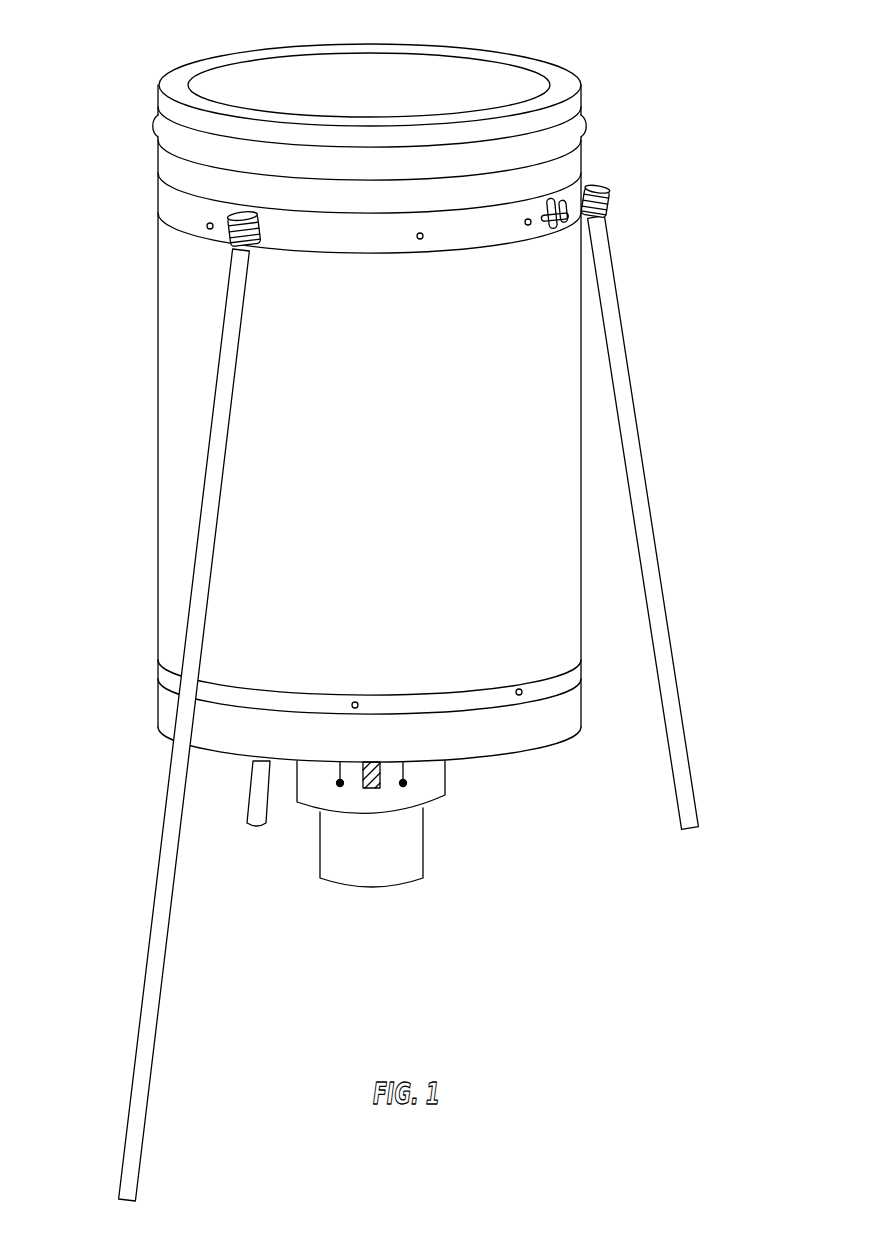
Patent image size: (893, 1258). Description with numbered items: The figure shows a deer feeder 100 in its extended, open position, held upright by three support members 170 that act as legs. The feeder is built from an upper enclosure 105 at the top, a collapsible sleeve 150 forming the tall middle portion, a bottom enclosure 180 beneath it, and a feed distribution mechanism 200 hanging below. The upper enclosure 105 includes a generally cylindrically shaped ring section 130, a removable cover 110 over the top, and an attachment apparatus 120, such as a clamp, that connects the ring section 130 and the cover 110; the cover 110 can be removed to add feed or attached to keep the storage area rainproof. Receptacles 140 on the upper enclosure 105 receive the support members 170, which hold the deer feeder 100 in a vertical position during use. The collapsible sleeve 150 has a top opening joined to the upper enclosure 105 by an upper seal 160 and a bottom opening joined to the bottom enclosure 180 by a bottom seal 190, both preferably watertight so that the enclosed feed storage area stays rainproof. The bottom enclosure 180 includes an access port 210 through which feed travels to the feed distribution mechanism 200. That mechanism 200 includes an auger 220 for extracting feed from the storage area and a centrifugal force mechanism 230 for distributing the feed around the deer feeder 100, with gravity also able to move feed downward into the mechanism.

The deer feeder 100 is at (450, 603).
The upper enclosure 105 is at (404, 129).
The removable cover 110 is at (408, 75).
The attachment apparatus 120 is at (567, 105).
The cylindrically shaped ring section 130 is at (565, 143).
The receptacles 140 is at (227, 218).
The collapsible sleeve 150 is at (401, 461).
The upper seal 160 is at (177, 214).
The support members 170 is at (230, 357).
The bottom enclosure 180 is at (367, 702).
The bottom seal 190 is at (568, 675).
The feed distribution mechanism 200 is at (472, 812).
The access port 210 is at (467, 730).
The auger 220 is at (380, 772).
The centrifugal force mechanism 230 is at (400, 848).